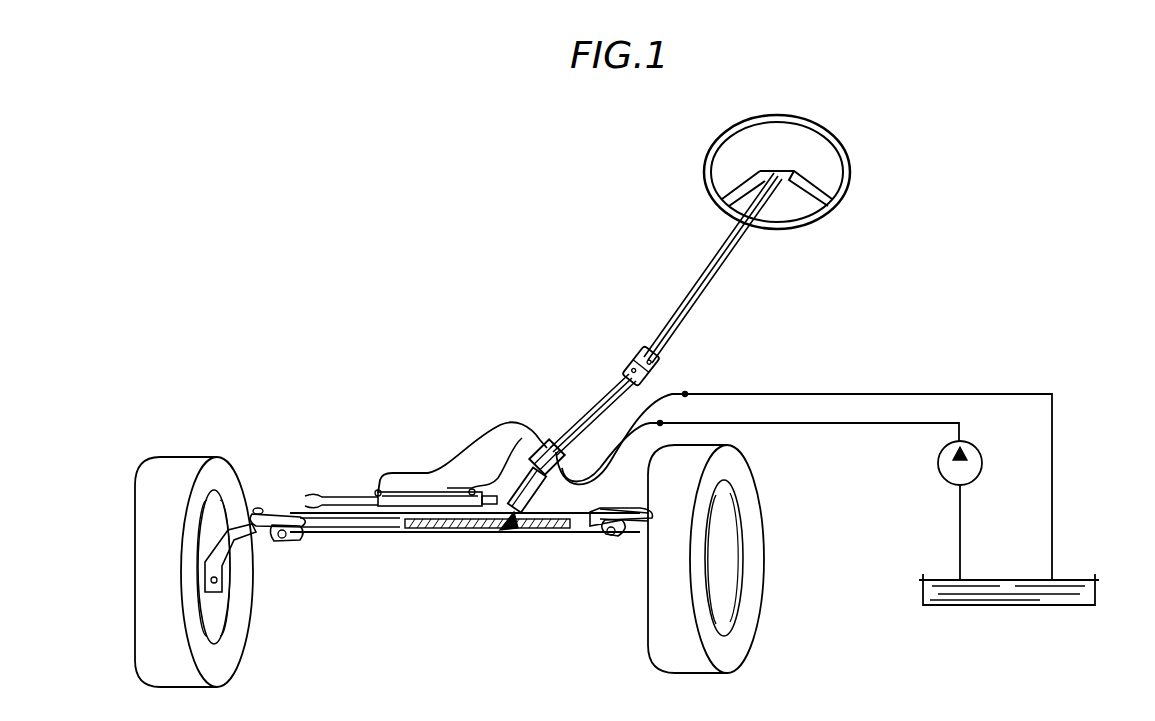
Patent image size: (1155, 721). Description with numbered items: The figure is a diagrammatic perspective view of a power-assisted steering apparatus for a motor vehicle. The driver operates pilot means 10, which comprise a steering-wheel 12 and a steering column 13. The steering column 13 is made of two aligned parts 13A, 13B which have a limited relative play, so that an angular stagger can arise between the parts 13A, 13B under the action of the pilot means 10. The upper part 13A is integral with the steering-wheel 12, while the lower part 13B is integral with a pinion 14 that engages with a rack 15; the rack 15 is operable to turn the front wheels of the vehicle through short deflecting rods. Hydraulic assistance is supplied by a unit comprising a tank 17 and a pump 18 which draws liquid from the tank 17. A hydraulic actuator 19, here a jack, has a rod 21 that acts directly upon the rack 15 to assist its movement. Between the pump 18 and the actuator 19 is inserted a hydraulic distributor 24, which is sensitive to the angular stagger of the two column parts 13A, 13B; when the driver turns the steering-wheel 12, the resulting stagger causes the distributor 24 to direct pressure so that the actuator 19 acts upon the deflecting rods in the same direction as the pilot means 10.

The pilot means 10 is at (638, 333).
The steering-wheel 12 is at (848, 148).
The steering column 13 is at (705, 268).
The part of the steering column 13A is at (602, 413).
The part of the steering column 13B is at (540, 512).
The pinion 14 is at (508, 530).
The rack 15 is at (415, 532).
The tank 17 is at (1095, 600).
The pump 18 is at (980, 457).
The hydraulic actuator 19 is at (447, 495).
The rod 21 is at (346, 494).
The hydraulic distributor 24 is at (555, 443).